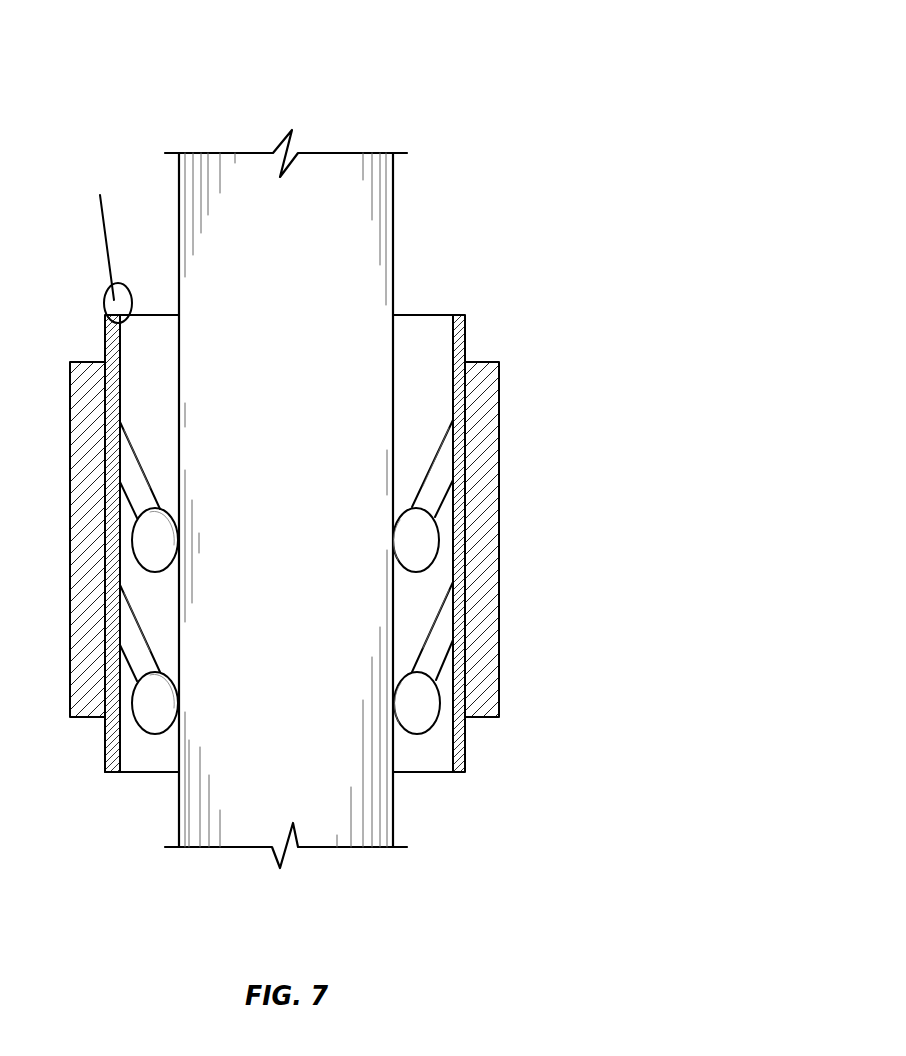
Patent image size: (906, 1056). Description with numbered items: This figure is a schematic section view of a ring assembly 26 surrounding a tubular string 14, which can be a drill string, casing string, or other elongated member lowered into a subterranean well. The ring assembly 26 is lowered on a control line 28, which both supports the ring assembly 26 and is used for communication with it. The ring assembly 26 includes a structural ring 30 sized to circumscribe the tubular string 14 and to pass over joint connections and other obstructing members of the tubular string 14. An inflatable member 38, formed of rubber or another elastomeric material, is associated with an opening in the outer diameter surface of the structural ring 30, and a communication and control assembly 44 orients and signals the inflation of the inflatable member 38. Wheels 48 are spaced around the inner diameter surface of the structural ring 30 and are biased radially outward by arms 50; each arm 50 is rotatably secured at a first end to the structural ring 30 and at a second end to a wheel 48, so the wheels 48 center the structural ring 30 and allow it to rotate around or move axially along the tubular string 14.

The tubular string 14 is at (393, 217).
The ring assembly 26 is at (330, 430).
The control line 28 is at (100, 225).
The structural ring 30 is at (418, 755).
The inflatable member 38 is at (495, 617).
The communication and control assembly 44 is at (118, 302).
The wheel 48 is at (163, 702).
The arm 50 is at (435, 493).